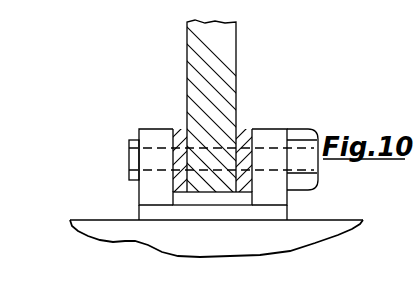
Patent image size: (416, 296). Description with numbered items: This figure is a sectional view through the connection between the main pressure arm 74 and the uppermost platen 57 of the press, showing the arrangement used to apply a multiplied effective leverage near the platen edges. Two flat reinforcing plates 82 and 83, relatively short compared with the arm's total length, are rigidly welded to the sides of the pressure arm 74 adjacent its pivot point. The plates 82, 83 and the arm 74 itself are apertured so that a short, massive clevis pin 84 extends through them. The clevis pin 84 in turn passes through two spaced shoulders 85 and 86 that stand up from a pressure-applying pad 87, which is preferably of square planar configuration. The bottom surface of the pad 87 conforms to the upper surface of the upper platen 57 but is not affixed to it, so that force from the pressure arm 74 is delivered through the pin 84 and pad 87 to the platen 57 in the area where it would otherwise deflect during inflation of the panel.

The pressure arm 74 is at (228, 58).
The reinforcing plate 82 is at (240, 131).
The reinforcing plate 83 is at (180, 133).
The clevis pin 84 is at (128, 152).
The shoulder 85 is at (148, 130).
The shoulder 86 is at (272, 135).
The pressure-applying pad 87 is at (153, 213).
The upper platen 57 is at (318, 237).